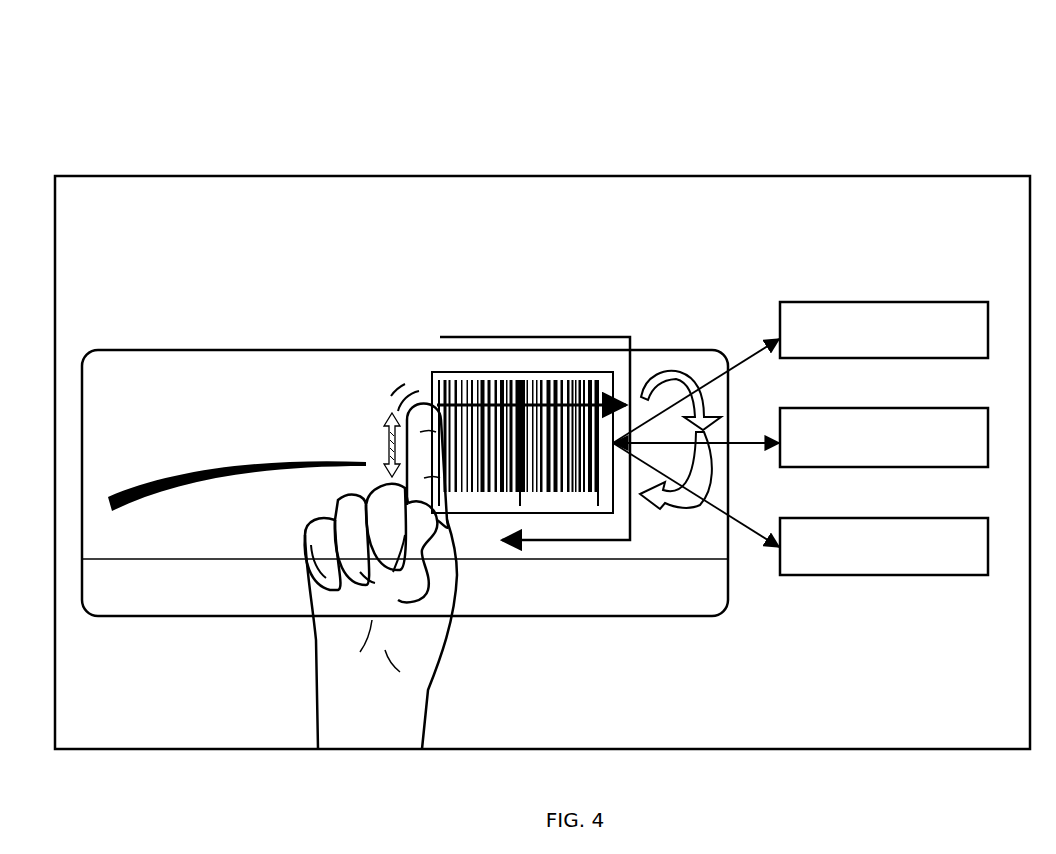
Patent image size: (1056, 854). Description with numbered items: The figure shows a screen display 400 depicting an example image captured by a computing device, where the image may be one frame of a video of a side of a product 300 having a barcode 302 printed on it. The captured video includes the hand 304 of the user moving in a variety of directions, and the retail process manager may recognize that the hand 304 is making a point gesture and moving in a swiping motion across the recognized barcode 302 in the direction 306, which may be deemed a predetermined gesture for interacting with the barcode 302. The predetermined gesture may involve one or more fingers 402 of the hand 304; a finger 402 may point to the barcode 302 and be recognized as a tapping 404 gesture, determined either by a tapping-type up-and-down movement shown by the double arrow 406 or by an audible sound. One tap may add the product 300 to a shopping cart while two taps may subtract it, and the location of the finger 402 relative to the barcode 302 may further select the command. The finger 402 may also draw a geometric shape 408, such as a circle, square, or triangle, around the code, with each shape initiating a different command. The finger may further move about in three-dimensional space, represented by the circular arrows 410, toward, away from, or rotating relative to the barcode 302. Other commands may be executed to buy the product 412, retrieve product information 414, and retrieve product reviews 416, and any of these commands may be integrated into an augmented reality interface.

The screen display 400 is at (262, 108).
The product 300 is at (533, 602).
The barcode 302 is at (496, 403).
The hand 304 is at (316, 642).
The direction 306 is at (508, 393).
The finger 402 is at (426, 408).
The tapping gesture 404 is at (399, 385).
The double arrow 406 is at (391, 416).
The geometric shape 408 is at (604, 336).
The circular arrows 410 is at (688, 373).
The buy the product command 412 is at (930, 301).
The retrieve product information command 414 is at (944, 407).
The retrieve product reviews command 416 is at (935, 517).